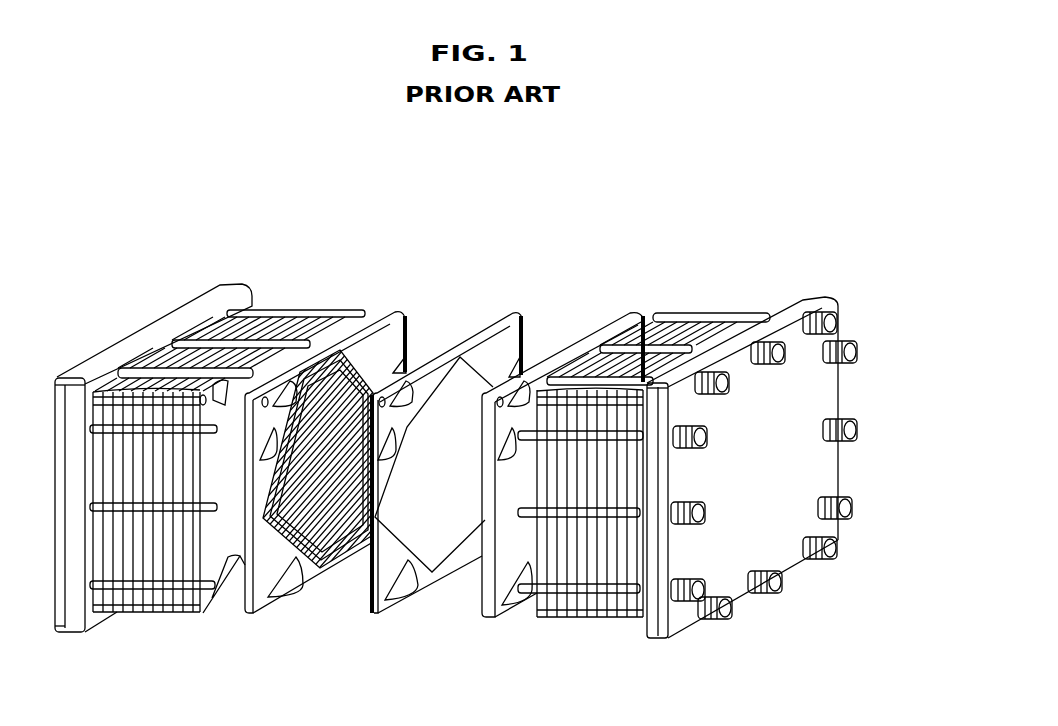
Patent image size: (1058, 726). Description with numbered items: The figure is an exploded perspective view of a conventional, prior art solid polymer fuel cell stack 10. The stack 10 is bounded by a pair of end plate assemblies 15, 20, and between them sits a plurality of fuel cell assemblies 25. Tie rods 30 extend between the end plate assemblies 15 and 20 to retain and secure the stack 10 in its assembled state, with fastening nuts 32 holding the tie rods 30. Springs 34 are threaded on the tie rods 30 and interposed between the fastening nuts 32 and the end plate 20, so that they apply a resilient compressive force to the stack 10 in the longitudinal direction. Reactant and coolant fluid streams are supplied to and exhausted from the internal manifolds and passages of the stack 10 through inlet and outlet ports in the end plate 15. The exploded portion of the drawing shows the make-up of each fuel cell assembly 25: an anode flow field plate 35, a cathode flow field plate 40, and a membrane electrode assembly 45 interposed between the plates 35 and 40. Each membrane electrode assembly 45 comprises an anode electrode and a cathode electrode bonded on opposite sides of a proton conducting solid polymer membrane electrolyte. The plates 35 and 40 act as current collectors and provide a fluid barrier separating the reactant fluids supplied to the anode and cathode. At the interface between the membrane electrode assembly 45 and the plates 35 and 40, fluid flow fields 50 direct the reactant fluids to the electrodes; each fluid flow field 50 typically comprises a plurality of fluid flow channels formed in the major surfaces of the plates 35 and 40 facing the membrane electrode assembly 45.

The fuel cell stack 10 is at (256, 206).
The end plate assembly 15 is at (106, 354).
The end plate assembly 20 is at (842, 296).
The fuel cell assembly 25 is at (142, 613).
The tie rods 30 is at (265, 342).
The fastening nuts 32 is at (857, 430).
The springs 34 is at (755, 595).
The anode flow field plate 35 is at (397, 310).
The cathode flow field plate 40 is at (635, 310).
The membrane electrode assembly 45 is at (513, 312).
The fluid flow field 50 is at (348, 560).